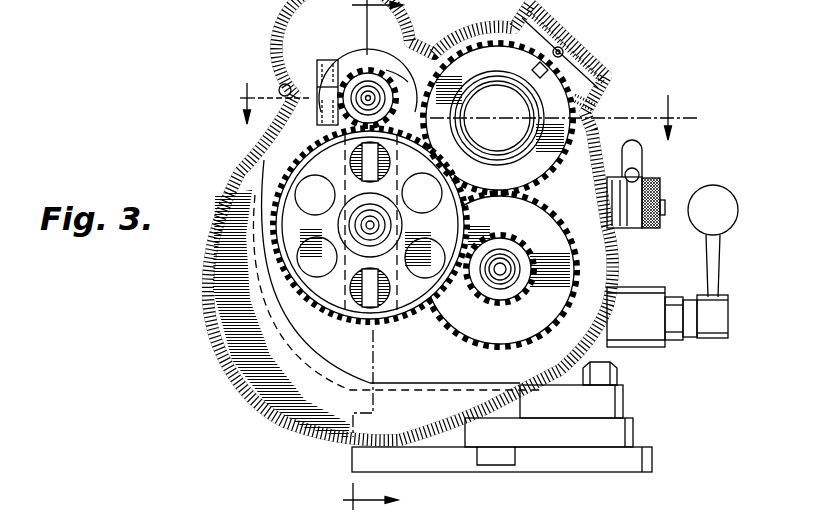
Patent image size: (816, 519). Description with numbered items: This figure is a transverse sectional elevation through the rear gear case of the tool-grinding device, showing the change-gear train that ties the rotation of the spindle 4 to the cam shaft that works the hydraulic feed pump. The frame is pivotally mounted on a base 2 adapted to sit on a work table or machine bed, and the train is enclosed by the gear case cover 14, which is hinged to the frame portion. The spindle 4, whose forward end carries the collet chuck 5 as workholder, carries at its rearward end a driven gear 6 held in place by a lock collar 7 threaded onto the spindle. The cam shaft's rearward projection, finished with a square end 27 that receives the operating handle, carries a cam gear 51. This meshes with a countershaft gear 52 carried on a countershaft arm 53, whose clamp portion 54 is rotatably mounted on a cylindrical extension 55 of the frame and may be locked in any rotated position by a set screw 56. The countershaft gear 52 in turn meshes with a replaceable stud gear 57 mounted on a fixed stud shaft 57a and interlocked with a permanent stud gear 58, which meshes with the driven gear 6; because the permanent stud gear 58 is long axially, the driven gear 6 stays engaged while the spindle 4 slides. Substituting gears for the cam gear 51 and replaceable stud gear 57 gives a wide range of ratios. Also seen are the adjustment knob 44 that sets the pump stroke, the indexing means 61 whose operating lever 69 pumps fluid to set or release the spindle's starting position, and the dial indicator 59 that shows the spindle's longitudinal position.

The base 2 is at (630, 401).
The spindle 4 is at (380, 257).
The collet chuck 5 is at (457, 112).
The driven gear 6 is at (560, 118).
The lock collar 7 is at (522, 150).
The gear case cover 14 is at (212, 285).
The square end 27 is at (382, 68).
The adjustment knob 44 is at (660, 192).
The cam gear 51 is at (392, 84).
The countershaft gear 52 is at (370, 225).
The countershaft arm 53 is at (338, 228).
The clamp portion 54 is at (372, 56).
The cylindrical extension 55 is at (326, 52).
The set screw 56 is at (296, 80).
The replaceable stud gear 57 is at (519, 312).
The fixed stud shaft 57a is at (511, 276).
The permanent stud gear 58 is at (500, 270).
The dial indicator 59 is at (603, 64).
The indexing means 61 is at (652, 317).
The operating lever 69 is at (713, 261).